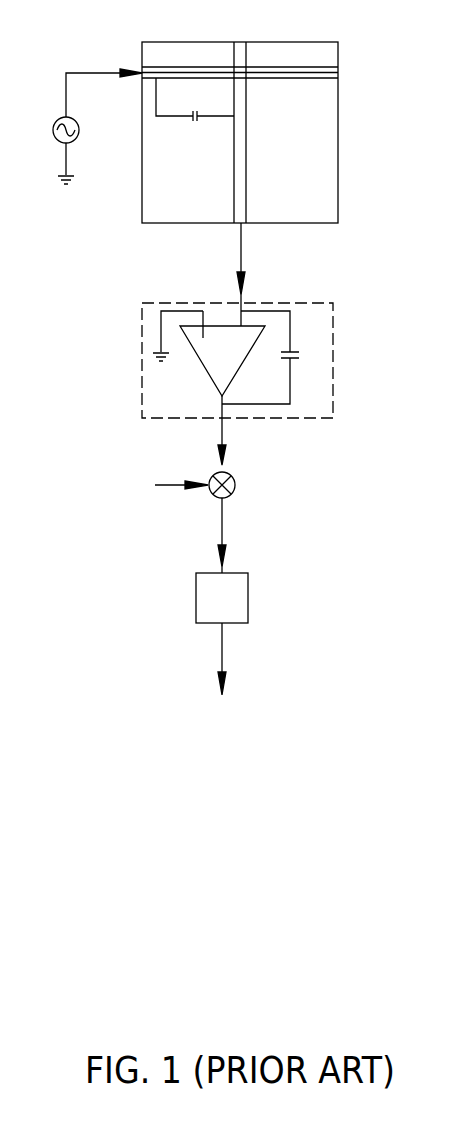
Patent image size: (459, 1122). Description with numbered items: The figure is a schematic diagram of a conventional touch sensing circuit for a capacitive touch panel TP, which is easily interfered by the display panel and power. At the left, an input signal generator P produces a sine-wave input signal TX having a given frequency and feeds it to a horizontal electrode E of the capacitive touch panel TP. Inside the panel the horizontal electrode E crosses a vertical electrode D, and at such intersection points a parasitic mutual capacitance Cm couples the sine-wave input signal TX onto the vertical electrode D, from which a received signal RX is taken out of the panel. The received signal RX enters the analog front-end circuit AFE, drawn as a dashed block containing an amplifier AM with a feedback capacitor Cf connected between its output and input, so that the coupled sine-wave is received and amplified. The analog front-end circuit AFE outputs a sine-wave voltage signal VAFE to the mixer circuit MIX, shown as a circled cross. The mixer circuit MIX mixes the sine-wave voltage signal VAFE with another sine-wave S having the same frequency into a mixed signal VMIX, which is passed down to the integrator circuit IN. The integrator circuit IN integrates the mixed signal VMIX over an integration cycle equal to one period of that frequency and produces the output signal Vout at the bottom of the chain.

The sine-wave input signal TX is at (104, 79).
The input signal generator P is at (57, 149).
The capacitive touch panel TP is at (323, 216).
The vertical electrode D is at (240, 46).
The horizontal electrode E is at (333, 72).
The parasitic mutual capacitance Cm is at (195, 118).
The received signal RX is at (254, 259).
The analog front-end circuit AFE is at (333, 320).
The amplifier AM is at (236, 371).
The feedback capacitor Cf is at (274, 357).
The sine-wave voltage signal VAFE is at (250, 445).
The mixer circuit MIX is at (236, 485).
The sine-wave S is at (174, 485).
The mixed signal VMIX is at (250, 532).
The integrator circuit IN is at (236, 611).
The output signal Vout is at (223, 678).